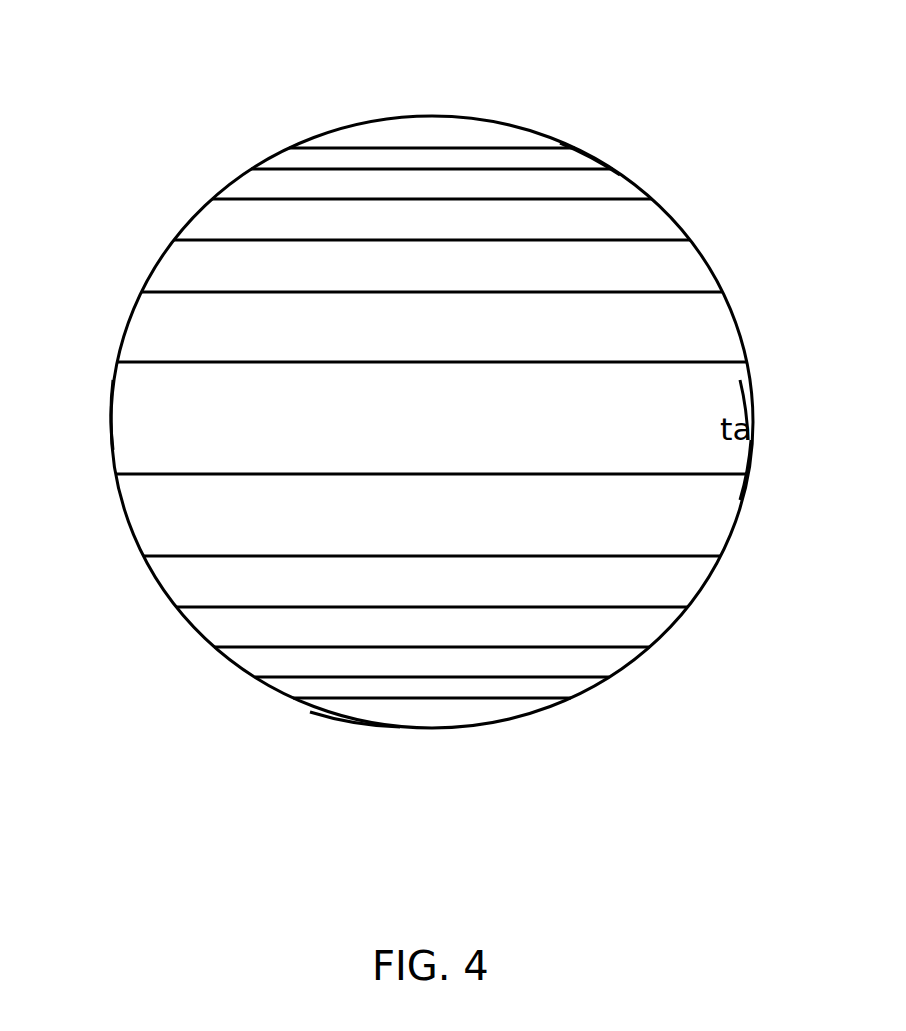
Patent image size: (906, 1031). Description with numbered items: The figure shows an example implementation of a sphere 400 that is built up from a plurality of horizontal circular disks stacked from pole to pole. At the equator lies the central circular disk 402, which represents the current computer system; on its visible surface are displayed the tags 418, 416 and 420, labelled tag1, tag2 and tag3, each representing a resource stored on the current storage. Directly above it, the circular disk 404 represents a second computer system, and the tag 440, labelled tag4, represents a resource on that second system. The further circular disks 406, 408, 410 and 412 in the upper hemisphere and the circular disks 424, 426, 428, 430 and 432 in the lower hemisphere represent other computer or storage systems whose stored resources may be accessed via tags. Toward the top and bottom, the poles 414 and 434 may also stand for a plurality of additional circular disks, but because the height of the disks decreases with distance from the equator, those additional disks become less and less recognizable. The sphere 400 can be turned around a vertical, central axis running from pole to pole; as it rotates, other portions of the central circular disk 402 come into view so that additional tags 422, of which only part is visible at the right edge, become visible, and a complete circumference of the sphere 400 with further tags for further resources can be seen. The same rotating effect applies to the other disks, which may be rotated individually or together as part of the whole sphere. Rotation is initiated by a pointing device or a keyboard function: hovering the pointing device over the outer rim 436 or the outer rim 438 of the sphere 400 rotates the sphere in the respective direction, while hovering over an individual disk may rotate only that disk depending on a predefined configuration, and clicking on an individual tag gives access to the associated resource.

The sphere 400 is at (374, 98).
The central circular disk 402 is at (175, 461).
The circular disk 404 is at (227, 340).
The circular disk 406 is at (219, 280).
The circular disk 408 is at (314, 230).
The circular disk 410 is at (346, 197).
The circular disk 412 is at (591, 150).
The pole 414 is at (494, 130).
The tag 416 is at (224, 403).
The tag 418 is at (410, 390).
The tag 420 is at (600, 398).
The additional tag 422 is at (742, 405).
The circular disk 424 is at (185, 533).
The circular disk 426 is at (226, 595).
The circular disk 428 is at (268, 638).
The circular disk 430 is at (311, 673).
The circular disk 432 is at (298, 690).
The pole 434 is at (352, 708).
The outer rim 436 is at (757, 461).
The outer rim 438 is at (104, 400).
The tag 440 is at (655, 302).